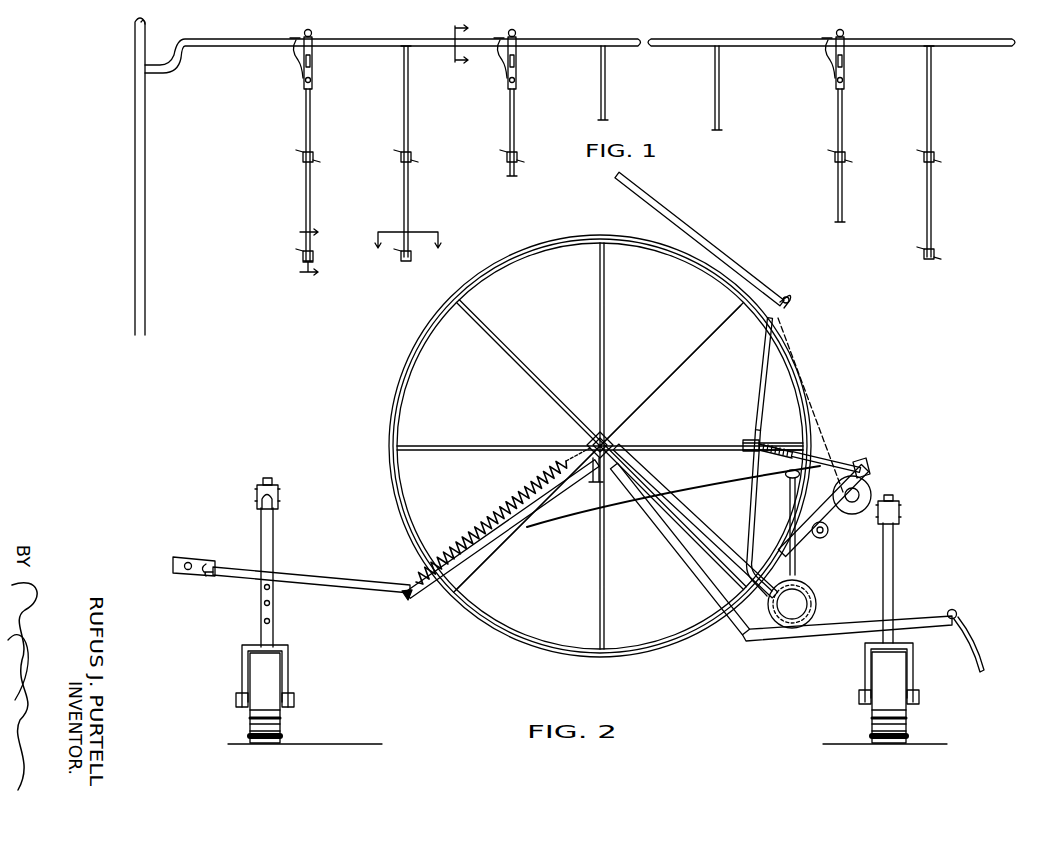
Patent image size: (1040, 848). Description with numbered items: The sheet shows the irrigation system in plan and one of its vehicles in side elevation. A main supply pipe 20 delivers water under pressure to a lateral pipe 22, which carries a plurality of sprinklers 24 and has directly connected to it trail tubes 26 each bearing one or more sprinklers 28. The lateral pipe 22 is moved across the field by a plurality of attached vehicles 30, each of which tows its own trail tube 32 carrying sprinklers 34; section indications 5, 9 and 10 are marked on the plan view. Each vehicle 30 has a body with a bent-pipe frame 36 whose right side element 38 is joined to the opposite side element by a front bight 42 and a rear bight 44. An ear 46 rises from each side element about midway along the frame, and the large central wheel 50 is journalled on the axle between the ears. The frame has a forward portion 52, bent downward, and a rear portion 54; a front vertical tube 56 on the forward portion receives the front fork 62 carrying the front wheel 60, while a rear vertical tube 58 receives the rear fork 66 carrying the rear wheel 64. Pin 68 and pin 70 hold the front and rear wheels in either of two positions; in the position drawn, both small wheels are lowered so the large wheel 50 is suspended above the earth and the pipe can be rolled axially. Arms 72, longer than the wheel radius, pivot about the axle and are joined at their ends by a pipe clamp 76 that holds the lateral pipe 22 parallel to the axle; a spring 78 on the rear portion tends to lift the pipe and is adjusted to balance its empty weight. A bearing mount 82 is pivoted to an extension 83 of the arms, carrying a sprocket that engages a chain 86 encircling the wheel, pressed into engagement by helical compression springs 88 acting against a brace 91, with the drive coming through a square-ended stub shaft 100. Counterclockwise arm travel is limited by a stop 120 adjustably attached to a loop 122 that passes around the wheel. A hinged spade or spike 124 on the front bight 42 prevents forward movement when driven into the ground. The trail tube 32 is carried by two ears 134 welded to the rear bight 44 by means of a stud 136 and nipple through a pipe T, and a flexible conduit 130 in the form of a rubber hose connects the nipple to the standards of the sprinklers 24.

In FIG. 1, the section line 5- 5 is at (468, 42).
In FIG. 1, the section line 9- 9 is at (316, 252).
In FIG. 1, the section line 10- 10 is at (402, 248).
In FIG. 1, the main supply pipe 20 is at (146, 120).
In FIG. 1, the lateral pipe 22 is at (780, 48).
In FIG. 2, the lateral pipe 22 is at (806, 604).
In FIG. 1, the sprinklers 24 is at (596, 41).
In FIG. 2, the sprinklers 24 is at (828, 465).
In FIG. 1, the trail tubes 26 is at (409, 110).
In FIG. 1, the sprinklers 28 is at (414, 168).
In FIG. 1, the vehicles 30 is at (521, 33).
In FIG. 2, the vehicles 30 is at (483, 649).
In FIG. 1, the trail tube 32 is at (311, 112).
In FIG. 1, the sprinklers 34 is at (316, 163).
In FIG. 2, the frame 36 is at (650, 532).
In FIG. 2, the right side element 38 is at (409, 603).
In FIG. 2, the front bight 42 is at (950, 610).
In FIG. 2, the rear bight 44 is at (210, 580).
In FIG. 2, the ear 46 is at (597, 484).
In FIG. 2, the large central wheel 50 is at (484, 291).
In FIG. 2, the forward portion of frame 52 is at (816, 653).
In FIG. 2, the rear portion of frame 54 is at (311, 563).
In FIG. 2, the front vertical tube 56 is at (899, 518).
In FIG. 2, the rear vertical tube 58 is at (280, 494).
In FIG. 2, the front wheel 60 is at (904, 712).
In FIG. 2, the front fork 62 is at (910, 680).
In FIG. 2, the rear wheel 64 is at (284, 716).
In FIG. 2, the rear fork 66 is at (286, 668).
In FIG. 2, the pin 68 is at (900, 506).
In FIG. 2, the pin 70 is at (278, 486).
In FIG. 2, the arms 72 is at (690, 563).
In FIG. 2, the pipe clamp 76 is at (816, 588).
In FIG. 2, the spring 78 is at (480, 513).
In FIG. 2, the bearing mount 82 is at (788, 527).
In FIG. 2, the extension 83 is at (747, 572).
In FIG. 2, the chain 86 is at (832, 405).
In FIG. 2, the helical compression springs 88 is at (790, 447).
In FIG. 2, the brace 91 is at (767, 397).
In FIG. 2, the stub shaft 100 is at (822, 536).
In FIG. 2, the stop 120 is at (712, 249).
In FIG. 2, the loop 122 is at (790, 303).
In FIG. 2, the spade or spike 124 is at (975, 648).
In FIG. 2, the flexible conduit 130 is at (706, 478).
In FIG. 2, the ears 134 is at (174, 555).
In FIG. 2, the stud 136 is at (192, 574).